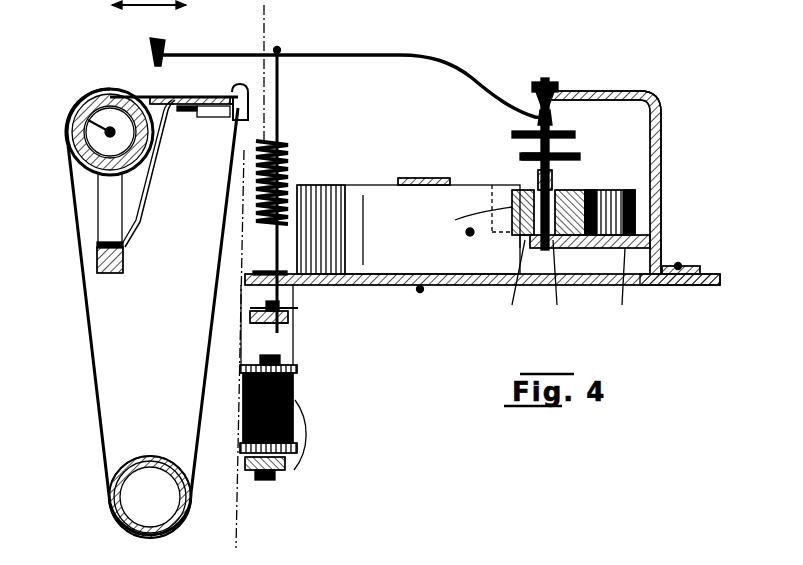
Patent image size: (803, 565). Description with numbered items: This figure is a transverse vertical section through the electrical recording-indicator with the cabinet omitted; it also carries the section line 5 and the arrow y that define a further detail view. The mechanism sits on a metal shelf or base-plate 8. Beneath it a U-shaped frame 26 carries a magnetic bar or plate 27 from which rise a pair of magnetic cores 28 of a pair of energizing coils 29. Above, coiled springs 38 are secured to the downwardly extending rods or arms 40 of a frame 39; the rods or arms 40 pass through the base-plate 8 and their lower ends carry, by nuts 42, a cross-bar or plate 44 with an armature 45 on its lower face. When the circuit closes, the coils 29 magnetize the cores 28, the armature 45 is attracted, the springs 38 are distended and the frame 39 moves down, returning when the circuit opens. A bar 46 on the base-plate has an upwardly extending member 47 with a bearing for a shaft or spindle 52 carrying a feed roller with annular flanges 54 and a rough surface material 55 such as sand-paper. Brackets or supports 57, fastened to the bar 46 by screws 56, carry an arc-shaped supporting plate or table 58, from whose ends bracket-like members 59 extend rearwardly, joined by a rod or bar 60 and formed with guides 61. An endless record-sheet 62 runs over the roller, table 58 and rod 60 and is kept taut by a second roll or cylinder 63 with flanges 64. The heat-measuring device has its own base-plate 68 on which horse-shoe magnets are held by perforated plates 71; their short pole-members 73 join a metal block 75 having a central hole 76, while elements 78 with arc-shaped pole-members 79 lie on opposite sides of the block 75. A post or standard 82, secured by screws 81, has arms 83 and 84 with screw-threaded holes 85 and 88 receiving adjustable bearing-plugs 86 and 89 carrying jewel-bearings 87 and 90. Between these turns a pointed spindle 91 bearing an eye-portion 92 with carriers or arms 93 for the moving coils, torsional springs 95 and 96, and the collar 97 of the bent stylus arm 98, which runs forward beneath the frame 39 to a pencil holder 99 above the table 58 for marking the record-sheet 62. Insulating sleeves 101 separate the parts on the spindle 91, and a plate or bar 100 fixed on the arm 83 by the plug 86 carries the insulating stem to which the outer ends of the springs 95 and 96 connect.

The arrow y is at (160, 15).
The section line 5 is at (259, 282).
The shelf or base-plate 8 is at (648, 287).
The U-shaped frame 26 is at (249, 465).
The magnetic bar or plate 27 is at (298, 459).
The magnetic core 28 is at (298, 360).
The energizing coil 29 is at (246, 391).
The coiled spring 38 is at (285, 180).
The frame 39 is at (281, 50).
The rod or arm 40 is at (282, 104).
The nut 42 is at (262, 317).
The cross-bar or plate 44 is at (288, 318).
The armature 45 is at (264, 327).
The bar 46 is at (115, 274).
The upwardly extending member 47 is at (108, 209).
The shaft or spindle 52 is at (82, 126).
The annular guide or flange 54 is at (82, 99).
The rough feeding surface material 55 is at (93, 167).
The screw 56 is at (104, 245).
The bracket or support 57 is at (149, 199).
The supporting plate or table 58 is at (190, 97).
The bracket-like member 59 is at (192, 108).
The rod or bar 60 is at (232, 112).
The guide 61 is at (238, 89).
The record-sheet 62 is at (150, 97).
The second roll or cylinder 63 is at (112, 519).
The guide or flange 64 is at (149, 455).
The base-plate 68 is at (410, 274).
The perforated plate 71 is at (424, 171).
The short arm or pole-member 73 is at (372, 200).
The metal block 75 is at (512, 197).
The hole or opening 76 is at (465, 224).
The element 78 is at (604, 214).
The arc-shaped pole-member 79 is at (610, 190).
The screw 81 is at (682, 265).
The post or standard 82 is at (662, 149).
The arm 83 is at (636, 91).
The arm 84 is at (625, 288).
The screw-threaded hole 85 is at (582, 92).
The screw-threaded bearing-plug 86 is at (548, 80).
The jewel-bearing 87 is at (540, 103).
The screw-threaded hole 88 is at (508, 284).
The screw-threaded bearing-plug 89 is at (555, 284).
The jewel-bearing 90 is at (580, 248).
The spindle 91 is at (520, 240).
The eye-portion 92 is at (538, 182).
The carrier or arm 93 is at (553, 185).
The torsional spring 95 is at (524, 156).
The torsional spring 96 is at (518, 134).
The collar or eye-portion 97 is at (556, 116).
The arm 98 is at (420, 49).
The holder 99 is at (152, 40).
The plate or bar 100 is at (532, 85).
The insulating sleeve 101 is at (560, 151).